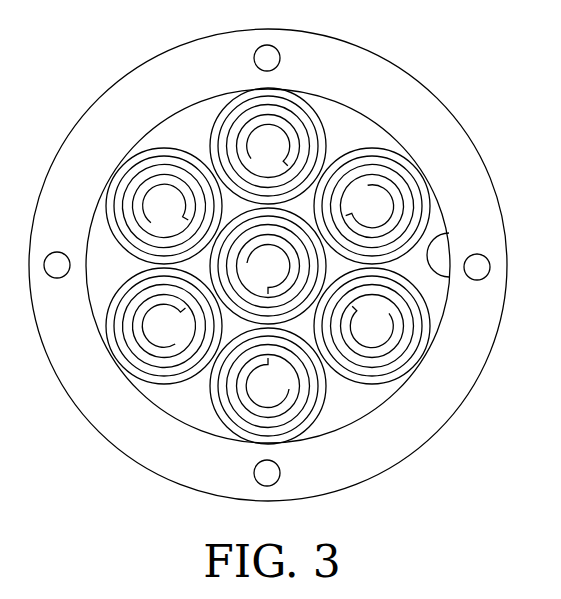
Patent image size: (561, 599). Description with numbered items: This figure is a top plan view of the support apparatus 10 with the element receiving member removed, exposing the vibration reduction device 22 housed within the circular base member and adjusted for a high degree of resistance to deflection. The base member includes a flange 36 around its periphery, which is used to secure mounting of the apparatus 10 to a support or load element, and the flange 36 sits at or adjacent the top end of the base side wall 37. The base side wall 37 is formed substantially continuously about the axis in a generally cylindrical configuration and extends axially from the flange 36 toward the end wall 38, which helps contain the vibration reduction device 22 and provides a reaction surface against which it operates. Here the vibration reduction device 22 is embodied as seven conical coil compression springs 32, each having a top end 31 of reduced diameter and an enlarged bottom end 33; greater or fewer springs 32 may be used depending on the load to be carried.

The support apparatus 10 is at (281, 263).
The vibration reduction device 22 is at (266, 273).
The top end 31 is at (172, 225).
The conical coil compression spring 32 is at (163, 362).
The bottom end 33 is at (108, 242).
The flange 36 is at (360, 62).
The base side wall 37 is at (443, 233).
The end wall 38 is at (332, 118).